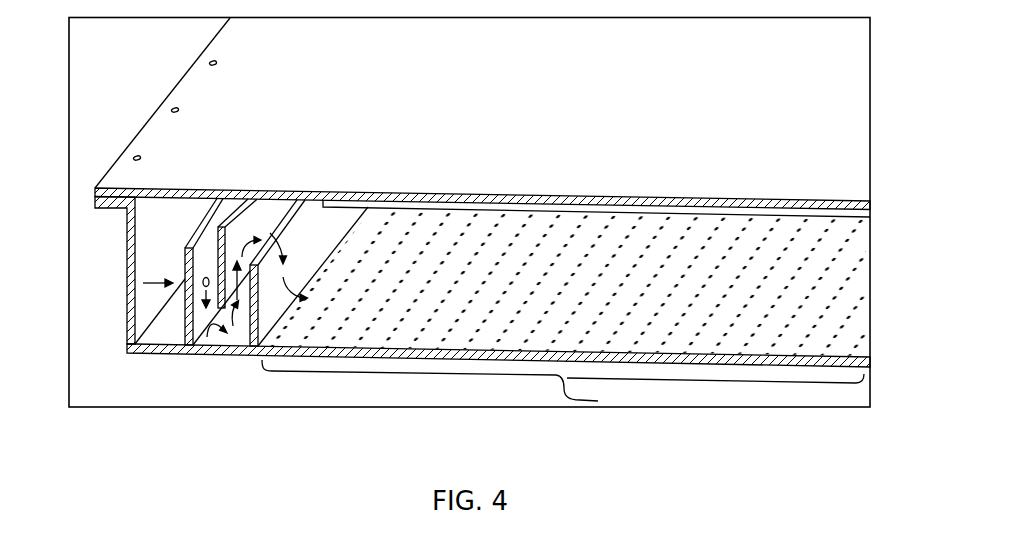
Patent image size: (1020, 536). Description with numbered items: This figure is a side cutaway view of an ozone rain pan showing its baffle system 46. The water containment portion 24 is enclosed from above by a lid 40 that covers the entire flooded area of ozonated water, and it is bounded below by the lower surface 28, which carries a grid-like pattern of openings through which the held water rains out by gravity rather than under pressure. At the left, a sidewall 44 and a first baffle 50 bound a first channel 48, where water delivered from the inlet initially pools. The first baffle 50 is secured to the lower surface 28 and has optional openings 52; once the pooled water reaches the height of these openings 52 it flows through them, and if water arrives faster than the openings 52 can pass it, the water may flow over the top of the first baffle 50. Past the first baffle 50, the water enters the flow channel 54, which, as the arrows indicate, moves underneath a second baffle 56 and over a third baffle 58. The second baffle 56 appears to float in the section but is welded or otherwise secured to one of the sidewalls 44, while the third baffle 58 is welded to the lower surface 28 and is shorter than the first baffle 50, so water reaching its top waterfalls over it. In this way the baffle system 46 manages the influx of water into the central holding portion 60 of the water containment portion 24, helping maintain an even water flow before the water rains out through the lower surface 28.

The water containment portion 24 is at (832, 306).
The lower surface 28 is at (274, 335).
The lid 40 is at (630, 126).
The sidewall 44 is at (128, 255).
The baffle system 46 is at (220, 364).
The first channel 48 is at (147, 256).
The first baffle 50 is at (185, 247).
The openings 52 is at (204, 281).
The flow channel 54 is at (200, 353).
The second baffle 56 is at (219, 227).
The third baffle 58 is at (250, 264).
The central holding portion 60 is at (598, 401).